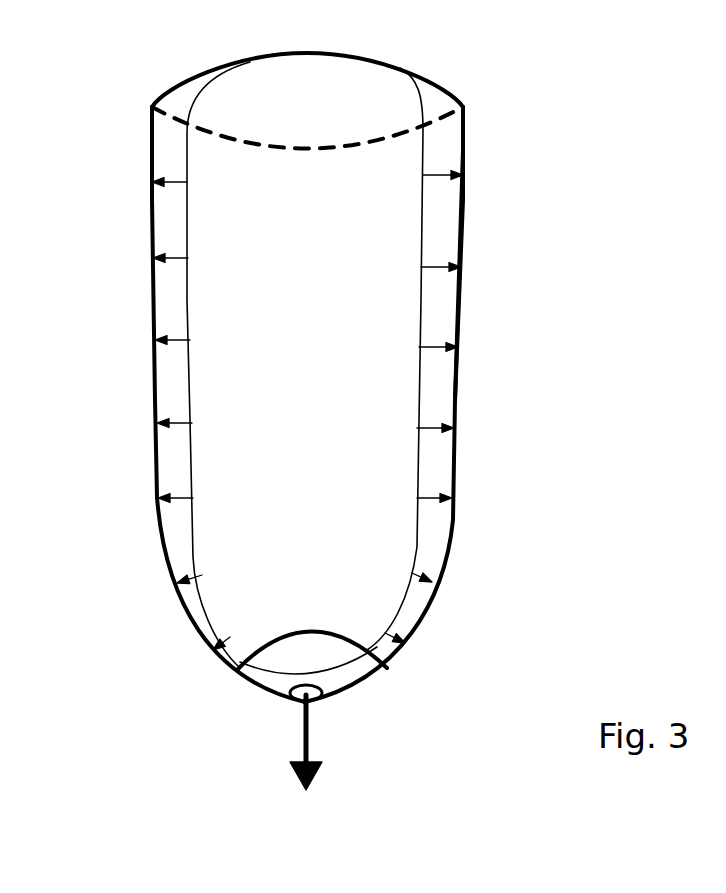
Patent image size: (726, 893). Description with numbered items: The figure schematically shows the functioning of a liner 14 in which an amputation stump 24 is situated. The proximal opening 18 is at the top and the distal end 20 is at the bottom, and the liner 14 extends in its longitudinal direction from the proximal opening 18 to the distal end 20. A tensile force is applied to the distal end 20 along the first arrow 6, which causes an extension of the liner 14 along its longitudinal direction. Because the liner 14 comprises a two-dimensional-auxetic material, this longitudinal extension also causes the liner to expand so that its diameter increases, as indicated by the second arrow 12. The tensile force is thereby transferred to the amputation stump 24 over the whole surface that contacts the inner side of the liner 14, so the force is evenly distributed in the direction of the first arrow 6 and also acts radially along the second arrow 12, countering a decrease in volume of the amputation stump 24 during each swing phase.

The proximal opening 18 is at (192, 58).
The amputation stump 24 is at (362, 100).
The liner 14 is at (482, 238).
The second arrow 12 is at (151, 186).
The distal end 20 is at (363, 674).
The first arrow 6 is at (318, 775).